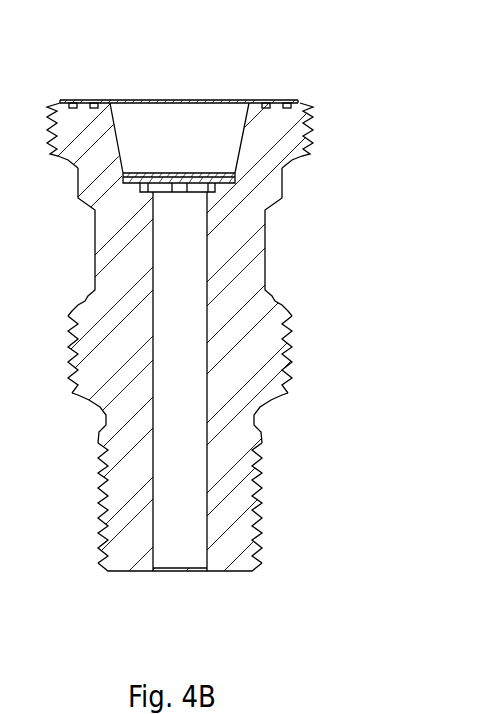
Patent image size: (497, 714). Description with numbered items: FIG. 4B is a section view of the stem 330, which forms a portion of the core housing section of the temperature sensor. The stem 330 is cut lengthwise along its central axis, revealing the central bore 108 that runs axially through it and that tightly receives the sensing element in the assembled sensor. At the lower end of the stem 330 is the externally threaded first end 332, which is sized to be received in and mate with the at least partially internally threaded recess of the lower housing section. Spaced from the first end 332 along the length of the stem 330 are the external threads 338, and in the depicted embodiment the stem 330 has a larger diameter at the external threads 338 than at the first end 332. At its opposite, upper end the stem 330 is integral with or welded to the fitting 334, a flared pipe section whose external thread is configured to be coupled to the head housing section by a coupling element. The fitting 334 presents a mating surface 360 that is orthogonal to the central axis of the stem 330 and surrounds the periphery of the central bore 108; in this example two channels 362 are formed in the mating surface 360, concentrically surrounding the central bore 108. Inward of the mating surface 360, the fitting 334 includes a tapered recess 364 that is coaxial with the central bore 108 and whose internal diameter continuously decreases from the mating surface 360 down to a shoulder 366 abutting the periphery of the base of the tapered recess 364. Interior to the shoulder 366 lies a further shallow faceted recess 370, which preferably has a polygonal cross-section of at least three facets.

The stem 330 is at (329, 68).
The mating surface 360 is at (92, 87).
The channels 362 is at (286, 102).
The tapered recess 364 is at (184, 114).
The shoulder 366 is at (226, 174).
The faceted recess 370 is at (160, 178).
The fitting 334 is at (315, 139).
The external threads 338 is at (294, 365).
The first end 332 is at (262, 533).
The central bore 108 is at (185, 560).